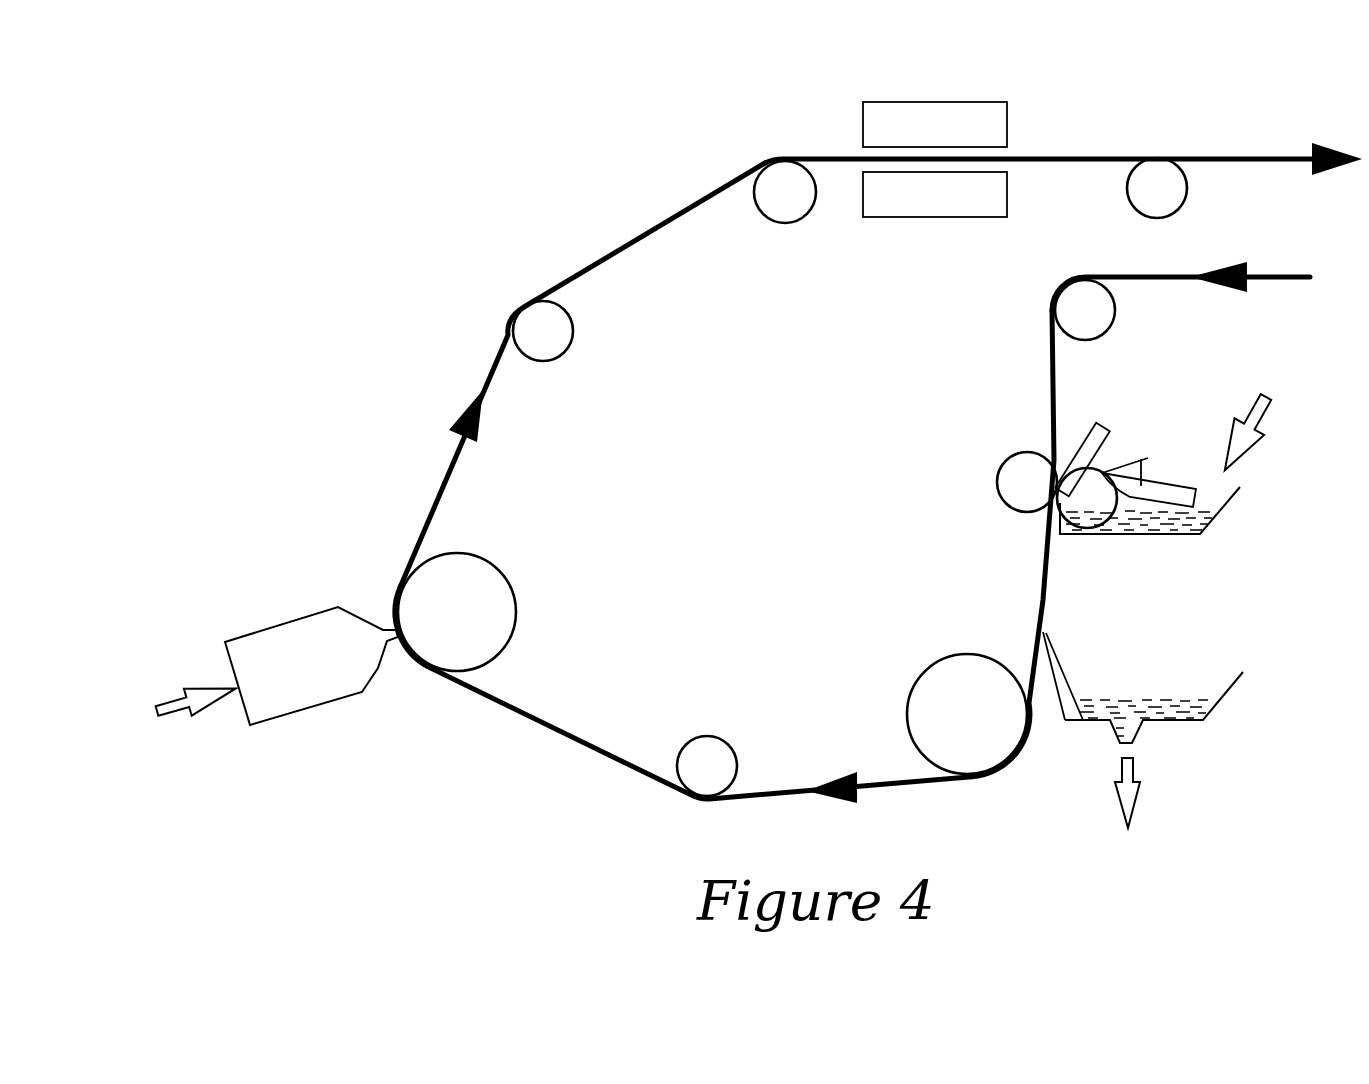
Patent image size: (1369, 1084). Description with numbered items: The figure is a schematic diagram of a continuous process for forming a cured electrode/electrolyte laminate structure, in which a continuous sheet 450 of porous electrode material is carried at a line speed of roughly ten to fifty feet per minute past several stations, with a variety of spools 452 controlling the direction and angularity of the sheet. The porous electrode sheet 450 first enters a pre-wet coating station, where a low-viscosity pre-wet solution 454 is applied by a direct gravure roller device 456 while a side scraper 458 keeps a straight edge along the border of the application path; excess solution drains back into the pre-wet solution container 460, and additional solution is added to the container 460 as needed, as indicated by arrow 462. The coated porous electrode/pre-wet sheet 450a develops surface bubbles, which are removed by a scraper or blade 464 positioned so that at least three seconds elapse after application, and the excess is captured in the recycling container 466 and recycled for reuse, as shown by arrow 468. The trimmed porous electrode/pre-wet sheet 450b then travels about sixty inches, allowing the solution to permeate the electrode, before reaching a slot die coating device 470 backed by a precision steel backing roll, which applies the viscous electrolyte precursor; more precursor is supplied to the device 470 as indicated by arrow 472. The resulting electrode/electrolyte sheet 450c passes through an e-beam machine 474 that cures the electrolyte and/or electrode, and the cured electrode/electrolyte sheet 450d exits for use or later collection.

The continuous sheet of electrode material 450 is at (1290, 279).
The porous electrode/pre-wet sheet 450a is at (1043, 560).
The trimmed porous electrode/pre-wet sheet 450b is at (630, 770).
The electrode/electrolyte sheet 450c is at (675, 217).
The cured electrode/electrolyte sheet 450d is at (1212, 157).
The spools 452 is at (1103, 314).
The pre-wet solution 454 is at (1205, 527).
The direct gravure roller device 456 is at (1152, 471).
The side scraper 458 is at (1085, 436).
The pre-wet solution container 460 is at (1133, 534).
The arrow 462 is at (1260, 441).
The scraper or blade 464 is at (1050, 665).
The recycling container 466 is at (1212, 705).
The arrow 468 is at (1133, 800).
The slot die coating device 470 is at (325, 605).
The arrow 472 is at (202, 690).
The e-beam machine 474 is at (935, 159).